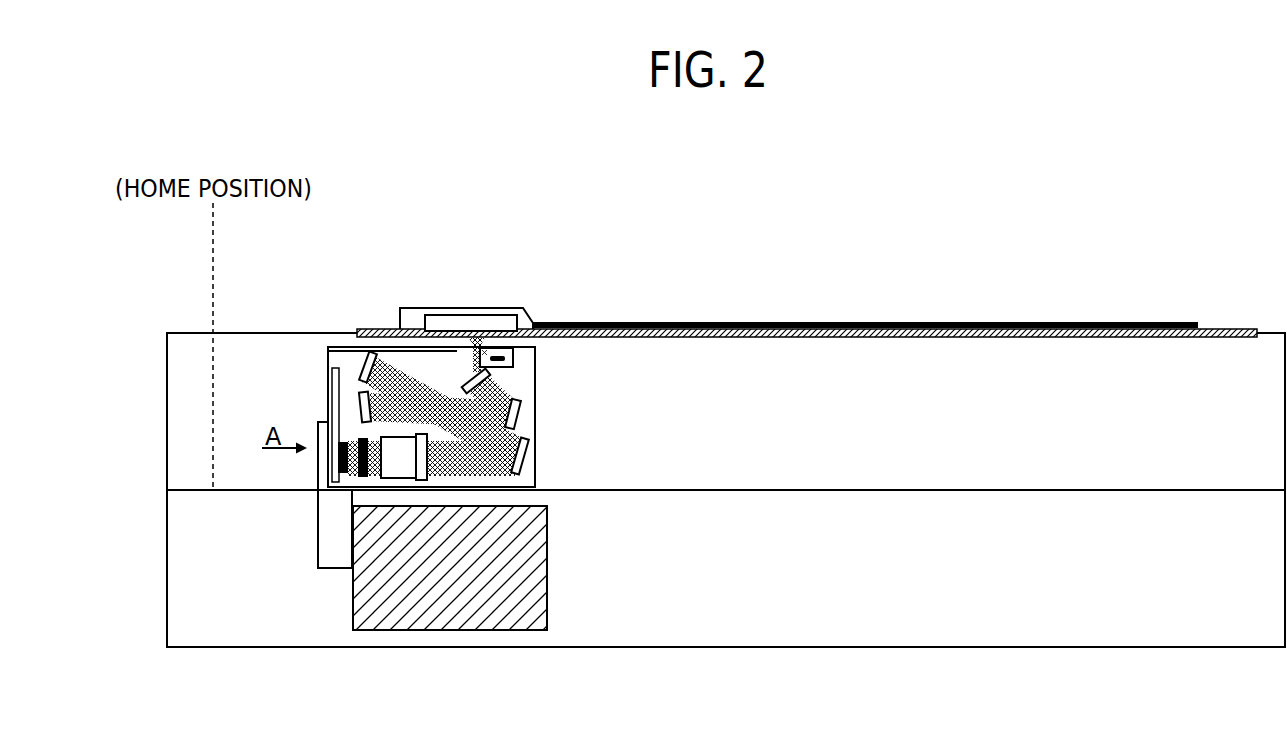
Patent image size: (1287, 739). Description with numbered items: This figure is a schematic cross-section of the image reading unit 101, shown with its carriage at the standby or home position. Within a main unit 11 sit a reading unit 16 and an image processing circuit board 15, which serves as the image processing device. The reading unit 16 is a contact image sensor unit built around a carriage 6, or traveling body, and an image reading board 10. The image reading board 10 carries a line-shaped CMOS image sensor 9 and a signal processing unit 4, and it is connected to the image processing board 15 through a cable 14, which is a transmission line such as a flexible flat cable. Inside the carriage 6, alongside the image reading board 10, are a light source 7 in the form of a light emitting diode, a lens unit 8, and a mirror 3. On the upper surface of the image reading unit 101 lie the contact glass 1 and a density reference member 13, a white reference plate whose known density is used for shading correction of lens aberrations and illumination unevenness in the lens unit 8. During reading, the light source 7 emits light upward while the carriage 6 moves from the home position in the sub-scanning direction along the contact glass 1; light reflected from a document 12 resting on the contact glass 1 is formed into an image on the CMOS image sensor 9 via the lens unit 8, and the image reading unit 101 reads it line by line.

The image reading unit 101 is at (1013, 212).
The contact glass 1 is at (1221, 328).
The mirror 3 is at (523, 455).
The signal processing unit 4 is at (340, 389).
The carriage 6 is at (535, 417).
The light source 7 is at (513, 358).
The lens unit 8 is at (420, 457).
The CMOS image sensor 9 is at (343, 476).
The image reading board 10 is at (335, 412).
The main unit 11 is at (166, 458).
The document 12 is at (864, 322).
The density reference member 13 is at (470, 323).
The cable 14 is at (318, 556).
The image processing circuit board 15 is at (547, 566).
The reading unit 16 is at (592, 397).